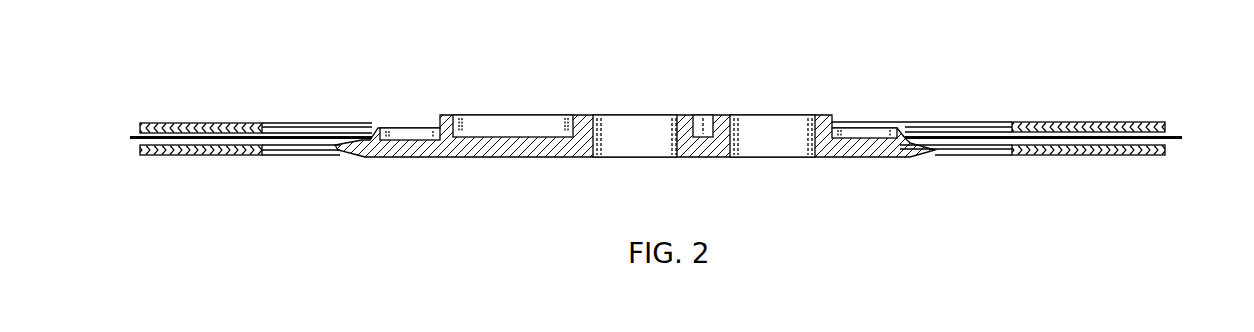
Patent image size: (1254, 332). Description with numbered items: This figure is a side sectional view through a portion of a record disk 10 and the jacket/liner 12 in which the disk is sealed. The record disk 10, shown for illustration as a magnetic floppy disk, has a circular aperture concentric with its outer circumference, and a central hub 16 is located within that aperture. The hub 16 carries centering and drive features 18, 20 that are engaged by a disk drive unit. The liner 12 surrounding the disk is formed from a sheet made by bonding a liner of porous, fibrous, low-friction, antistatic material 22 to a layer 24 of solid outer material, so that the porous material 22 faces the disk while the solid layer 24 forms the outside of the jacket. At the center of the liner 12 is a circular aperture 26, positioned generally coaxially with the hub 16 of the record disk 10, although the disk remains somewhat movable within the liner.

The record disk 10 is at (322, 135).
The jacket/liner 12 is at (222, 108).
The central hub 16 is at (512, 114).
The centering and drive feature 18 is at (624, 148).
The centering and drive feature 20 is at (765, 150).
The porous, fibrous, low-friction, antistatic material 22 is at (140, 146).
The layer of solid, outer material 24 is at (1085, 122).
The circular aperture 26 is at (1012, 122).